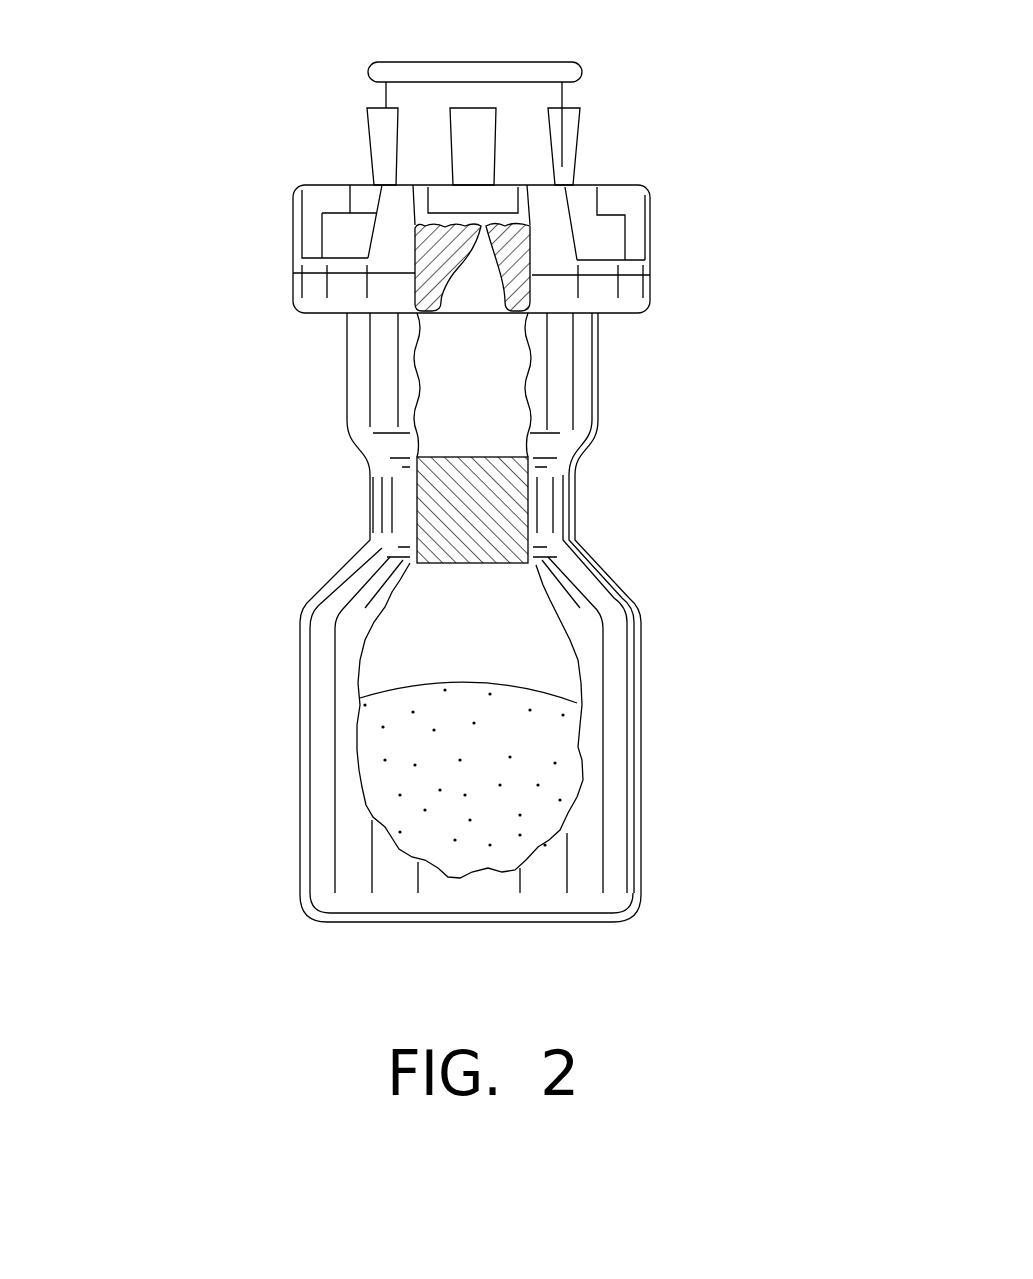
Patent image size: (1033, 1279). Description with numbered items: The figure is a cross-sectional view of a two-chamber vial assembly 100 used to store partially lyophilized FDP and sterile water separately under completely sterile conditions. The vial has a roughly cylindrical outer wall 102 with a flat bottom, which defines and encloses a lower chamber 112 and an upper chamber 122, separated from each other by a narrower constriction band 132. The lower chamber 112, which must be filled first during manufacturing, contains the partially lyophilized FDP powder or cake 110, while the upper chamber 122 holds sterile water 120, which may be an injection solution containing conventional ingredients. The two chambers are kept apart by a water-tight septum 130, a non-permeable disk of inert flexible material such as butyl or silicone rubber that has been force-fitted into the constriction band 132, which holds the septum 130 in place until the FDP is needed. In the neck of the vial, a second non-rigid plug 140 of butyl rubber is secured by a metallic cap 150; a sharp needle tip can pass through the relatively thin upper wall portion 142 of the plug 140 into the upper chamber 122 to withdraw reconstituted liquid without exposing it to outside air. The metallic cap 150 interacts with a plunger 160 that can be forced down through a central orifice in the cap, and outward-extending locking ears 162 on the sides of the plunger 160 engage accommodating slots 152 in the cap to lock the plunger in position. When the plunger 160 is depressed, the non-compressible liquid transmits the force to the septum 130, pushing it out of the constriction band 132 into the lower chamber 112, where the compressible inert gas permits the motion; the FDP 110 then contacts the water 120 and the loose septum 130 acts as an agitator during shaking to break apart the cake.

The two-chamber vial assembly 100 is at (252, 888).
The outer wall 102 is at (298, 755).
The partially lyophilized FDP powder or cake 110 is at (498, 732).
The lower chamber 112 is at (645, 815).
The sterile water 120 is at (502, 333).
The upper chamber 122 is at (593, 428).
The septum 130 is at (475, 565).
The constriction band 132 is at (573, 505).
The non-rigid plug 140 is at (500, 285).
The upper wall portion 142 is at (478, 240).
The metallic cap 150 is at (653, 233).
The slots 152 is at (623, 205).
The plunger 160 is at (365, 72).
The locking ears 162 is at (367, 147).